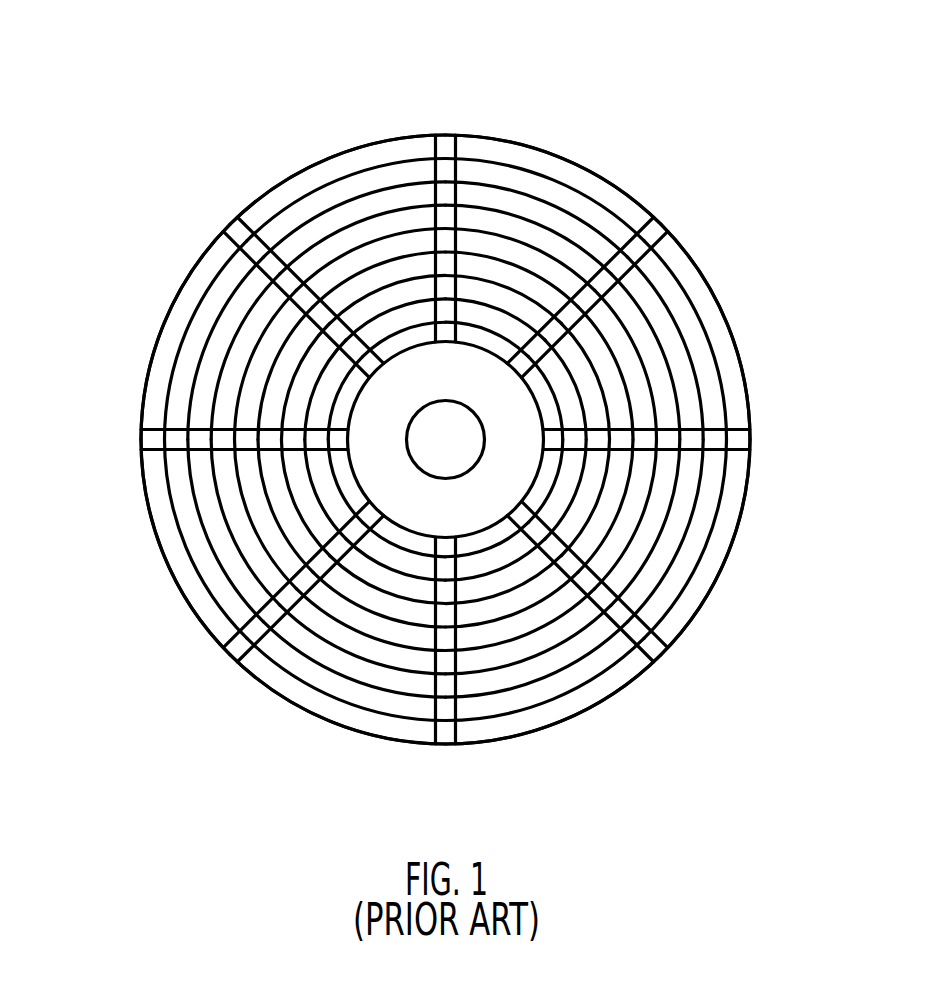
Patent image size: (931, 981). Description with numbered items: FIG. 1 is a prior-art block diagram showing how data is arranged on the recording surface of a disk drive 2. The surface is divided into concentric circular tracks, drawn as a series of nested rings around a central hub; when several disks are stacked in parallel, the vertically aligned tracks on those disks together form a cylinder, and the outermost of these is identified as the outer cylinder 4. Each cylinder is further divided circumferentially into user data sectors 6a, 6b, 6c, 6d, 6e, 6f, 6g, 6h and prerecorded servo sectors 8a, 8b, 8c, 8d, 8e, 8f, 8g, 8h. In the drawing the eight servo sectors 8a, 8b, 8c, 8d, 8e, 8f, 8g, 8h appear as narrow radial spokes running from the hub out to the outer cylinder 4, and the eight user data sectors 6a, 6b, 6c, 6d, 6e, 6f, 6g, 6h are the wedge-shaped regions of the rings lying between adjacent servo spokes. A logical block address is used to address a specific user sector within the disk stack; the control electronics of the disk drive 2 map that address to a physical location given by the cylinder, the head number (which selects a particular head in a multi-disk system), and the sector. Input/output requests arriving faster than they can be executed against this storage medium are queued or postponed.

The disk drive 2 is at (243, 104).
The outer cylinder 4 is at (505, 148).
The user data sector 6a is at (593, 183).
The user data sector 6b is at (720, 323).
The user data sector 6c is at (722, 545).
The user data sector 6d is at (575, 708).
The user data sector 6e is at (318, 708).
The user data sector 6f is at (165, 542).
The user data sector 6g is at (168, 322).
The user data sector 6h is at (333, 167).
The prerecorded servo sector 8a is at (445, 147).
The prerecorded servo sector 8b is at (657, 227).
The prerecorded servo sector 8c is at (742, 440).
The prerecorded servo sector 8d is at (656, 652).
The prerecorded servo sector 8e is at (446, 738).
The prerecorded servo sector 8f is at (235, 652).
The prerecorded servo sector 8g is at (143, 440).
The prerecorded servo sector 8h is at (233, 228).